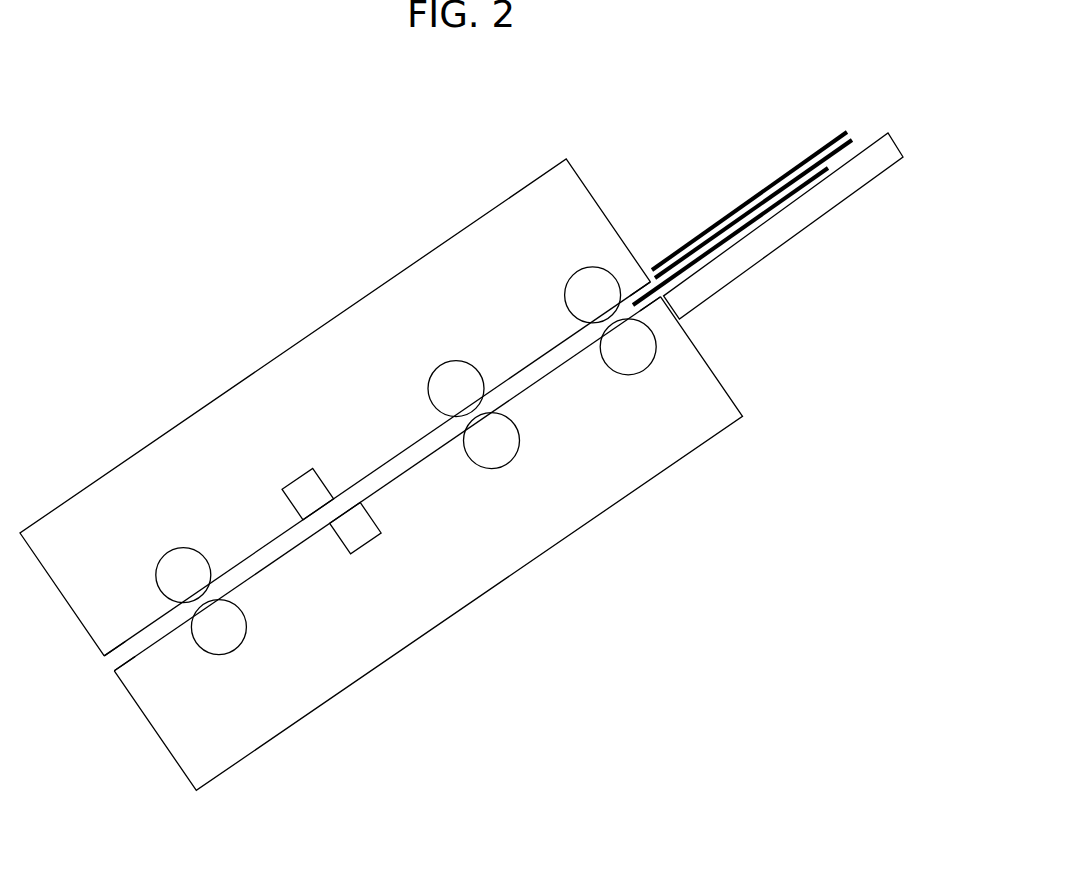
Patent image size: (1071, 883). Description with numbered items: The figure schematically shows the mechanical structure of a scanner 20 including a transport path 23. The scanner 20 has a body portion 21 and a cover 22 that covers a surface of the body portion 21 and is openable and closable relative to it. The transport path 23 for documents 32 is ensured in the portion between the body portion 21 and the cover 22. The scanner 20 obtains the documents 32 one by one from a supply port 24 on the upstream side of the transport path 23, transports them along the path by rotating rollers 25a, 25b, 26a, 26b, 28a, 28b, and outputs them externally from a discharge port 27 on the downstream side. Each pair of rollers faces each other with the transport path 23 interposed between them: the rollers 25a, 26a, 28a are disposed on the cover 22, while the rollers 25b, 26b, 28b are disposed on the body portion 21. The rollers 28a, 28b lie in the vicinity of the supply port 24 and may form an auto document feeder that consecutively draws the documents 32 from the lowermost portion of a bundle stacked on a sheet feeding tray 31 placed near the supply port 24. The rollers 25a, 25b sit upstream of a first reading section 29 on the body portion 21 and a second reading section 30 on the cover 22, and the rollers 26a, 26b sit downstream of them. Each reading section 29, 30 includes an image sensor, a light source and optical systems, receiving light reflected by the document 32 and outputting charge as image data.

The scanner 20 is at (296, 308).
The body portion 21 is at (716, 392).
The cover 22 is at (589, 190).
The transport path 23 is at (551, 346).
The supply port 24 is at (637, 286).
The roller 25a is at (447, 362).
The roller 25b is at (520, 437).
The roller 26a is at (184, 548).
The roller 26b is at (208, 654).
The discharge port 27 is at (96, 666).
The roller 28a is at (595, 266).
The roller 28b is at (622, 374).
The first reading section 29 is at (372, 517).
The second reading section 30 is at (298, 474).
The sheet feeding tray 31 is at (779, 250).
The documents 32 is at (832, 132).